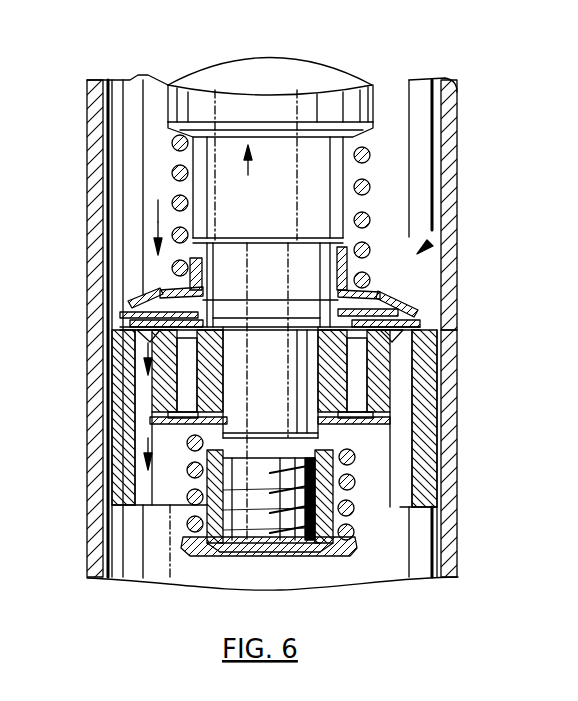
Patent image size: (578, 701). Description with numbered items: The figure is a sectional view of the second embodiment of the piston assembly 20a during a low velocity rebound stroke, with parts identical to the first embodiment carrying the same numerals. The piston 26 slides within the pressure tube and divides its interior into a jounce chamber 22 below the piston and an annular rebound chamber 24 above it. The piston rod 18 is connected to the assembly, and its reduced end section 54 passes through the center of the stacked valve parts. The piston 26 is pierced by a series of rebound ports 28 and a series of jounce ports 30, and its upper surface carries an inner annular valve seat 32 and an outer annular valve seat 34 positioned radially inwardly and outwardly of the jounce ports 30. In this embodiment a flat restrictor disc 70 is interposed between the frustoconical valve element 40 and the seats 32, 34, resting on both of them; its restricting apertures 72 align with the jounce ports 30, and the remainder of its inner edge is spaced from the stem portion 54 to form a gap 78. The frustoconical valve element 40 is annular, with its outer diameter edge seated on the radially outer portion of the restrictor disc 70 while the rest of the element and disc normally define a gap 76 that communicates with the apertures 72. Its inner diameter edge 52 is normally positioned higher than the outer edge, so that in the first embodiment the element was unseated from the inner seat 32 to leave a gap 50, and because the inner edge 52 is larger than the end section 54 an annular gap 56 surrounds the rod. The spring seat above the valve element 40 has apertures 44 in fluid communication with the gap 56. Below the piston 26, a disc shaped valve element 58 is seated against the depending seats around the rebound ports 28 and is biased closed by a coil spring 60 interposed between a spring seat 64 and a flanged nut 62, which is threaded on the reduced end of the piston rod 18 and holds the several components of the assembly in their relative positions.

The piston rod 18 is at (350, 105).
The piston assembly 20a is at (428, 246).
The jounce chamber 22 is at (453, 577).
The rebound chamber 24 is at (407, 133).
The piston 26 is at (423, 393).
The rebound ports 28 is at (188, 393).
The jounce ports 30 is at (150, 388).
The inner annular valve seat 32 is at (318, 390).
The outer annular valve seat 34 is at (403, 362).
The frustoconical valve element 40 is at (440, 300).
The apertures 44 is at (160, 287).
The gap 50 is at (232, 258).
The inner diameter edge 52 is at (418, 314).
The end section of piston rod 54 is at (340, 255).
The annular gap 56 is at (205, 307).
The disc shaped valve element 58 is at (430, 455).
The coil spring 60 is at (357, 517).
The flanged nut 62 is at (352, 557).
The spring seat 64 is at (365, 478).
The flat restrictor disc 70 is at (426, 323).
The restricting apertures 72 is at (133, 328).
The gap 76 is at (300, 315).
The gap 78 is at (330, 307).